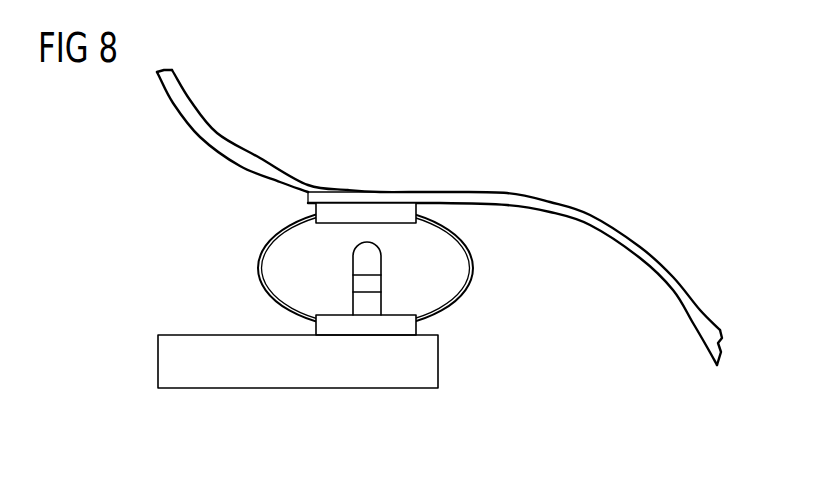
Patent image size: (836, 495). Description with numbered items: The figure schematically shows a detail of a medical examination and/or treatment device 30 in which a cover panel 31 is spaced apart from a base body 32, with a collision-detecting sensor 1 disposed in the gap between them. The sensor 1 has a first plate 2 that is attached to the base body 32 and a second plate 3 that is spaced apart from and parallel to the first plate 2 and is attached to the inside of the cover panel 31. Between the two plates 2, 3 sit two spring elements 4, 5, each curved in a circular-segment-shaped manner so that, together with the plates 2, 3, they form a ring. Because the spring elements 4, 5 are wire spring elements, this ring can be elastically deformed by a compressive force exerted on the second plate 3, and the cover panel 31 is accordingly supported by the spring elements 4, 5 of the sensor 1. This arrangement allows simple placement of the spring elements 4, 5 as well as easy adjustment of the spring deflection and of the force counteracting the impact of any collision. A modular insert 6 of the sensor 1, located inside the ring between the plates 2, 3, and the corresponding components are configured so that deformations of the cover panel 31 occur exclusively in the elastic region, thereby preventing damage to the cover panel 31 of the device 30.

The sensor 1 is at (404, 290).
The first plate 2 is at (360, 327).
The second plate 3 is at (388, 215).
The spring element 4 is at (258, 270).
The spring element 5 is at (473, 270).
The modular insert 6 is at (410, 273).
The medical examination and/or treatment device 30 is at (476, 217).
The cover panel 31 is at (568, 207).
The base body 32 is at (440, 353).